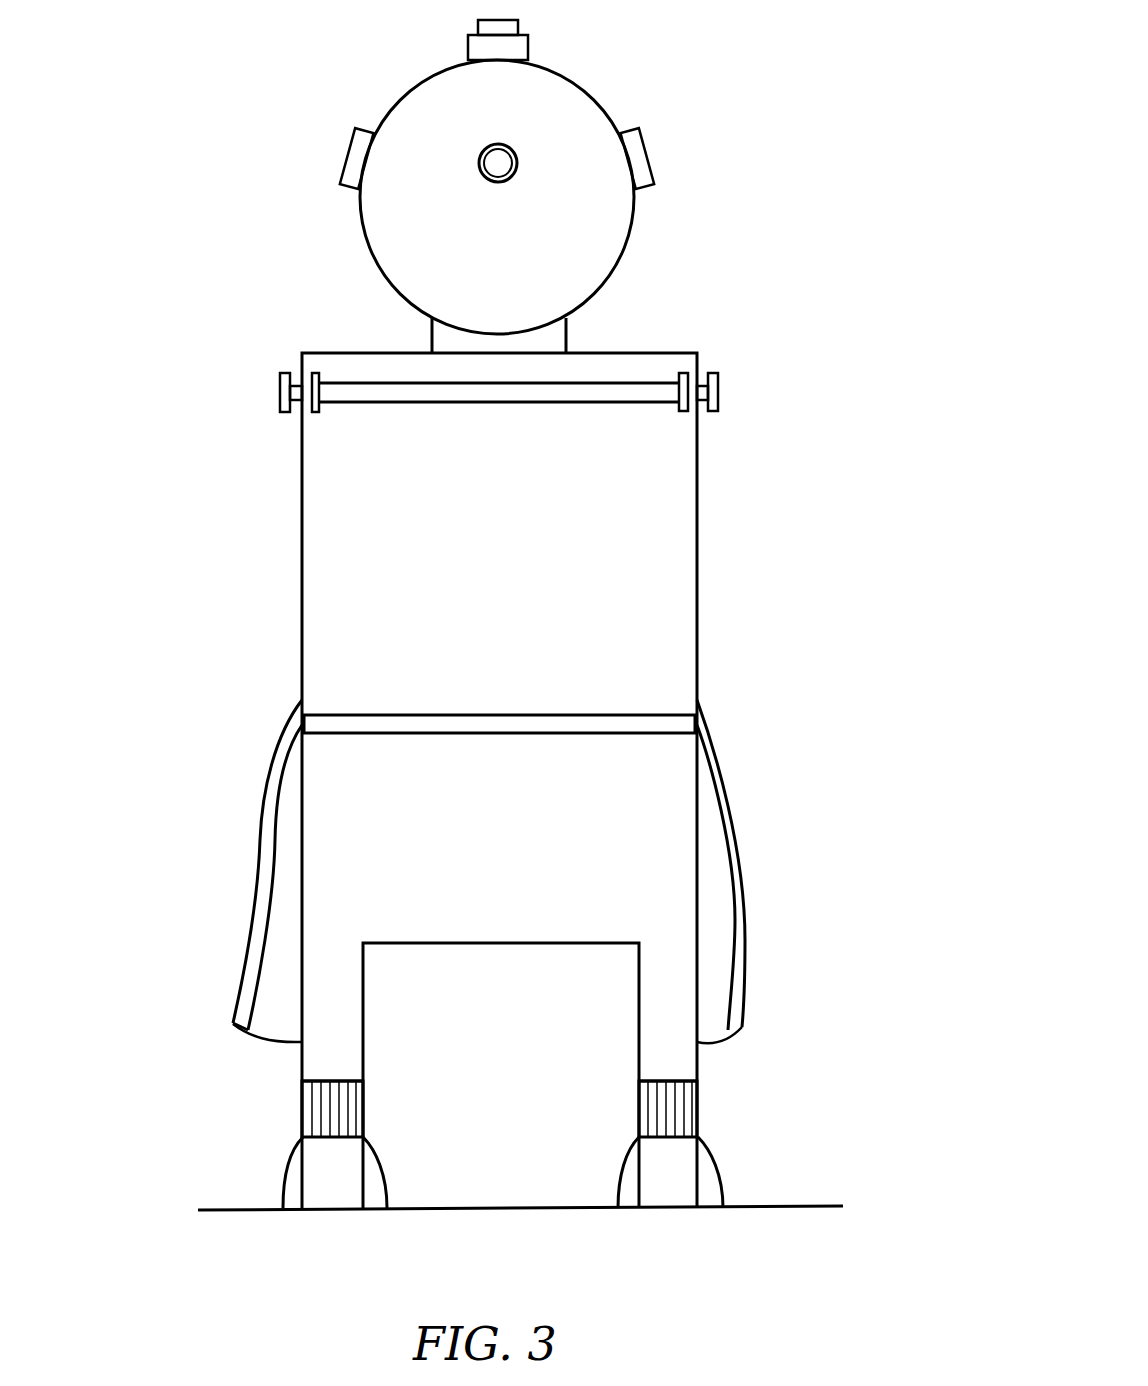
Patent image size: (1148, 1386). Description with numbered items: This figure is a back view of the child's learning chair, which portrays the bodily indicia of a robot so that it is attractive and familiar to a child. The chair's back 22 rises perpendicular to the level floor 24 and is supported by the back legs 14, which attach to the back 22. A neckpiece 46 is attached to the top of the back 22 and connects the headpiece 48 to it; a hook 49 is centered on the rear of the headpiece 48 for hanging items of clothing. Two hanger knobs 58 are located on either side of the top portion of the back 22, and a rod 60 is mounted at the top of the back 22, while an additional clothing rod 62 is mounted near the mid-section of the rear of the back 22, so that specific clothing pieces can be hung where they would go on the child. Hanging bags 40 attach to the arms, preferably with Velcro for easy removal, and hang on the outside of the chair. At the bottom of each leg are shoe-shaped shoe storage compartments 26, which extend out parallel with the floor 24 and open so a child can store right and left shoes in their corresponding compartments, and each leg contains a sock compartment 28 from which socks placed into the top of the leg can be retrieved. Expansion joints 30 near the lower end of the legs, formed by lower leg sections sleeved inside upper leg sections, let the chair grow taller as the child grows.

The back legs 14 is at (323, 1037).
The back 22 is at (700, 581).
The floor 24 is at (773, 1207).
The shoe storage compartments 26 is at (381, 1164).
The sock compartment 28 is at (364, 1109).
The expansion joints 30 is at (362, 1081).
The hanging bags 40 is at (261, 870).
The neckpiece 46 is at (567, 343).
The headpiece 48 is at (449, 66).
The hook 49 is at (503, 145).
The hanger knobs 58 is at (280, 392).
The rod 60 is at (421, 406).
The clothing rod 62 is at (505, 714).